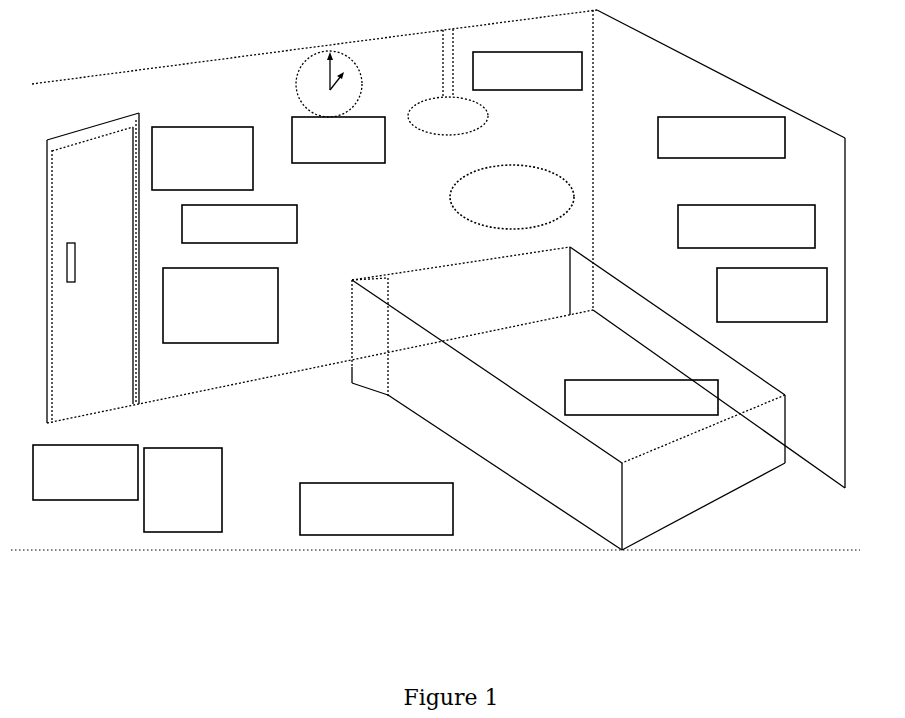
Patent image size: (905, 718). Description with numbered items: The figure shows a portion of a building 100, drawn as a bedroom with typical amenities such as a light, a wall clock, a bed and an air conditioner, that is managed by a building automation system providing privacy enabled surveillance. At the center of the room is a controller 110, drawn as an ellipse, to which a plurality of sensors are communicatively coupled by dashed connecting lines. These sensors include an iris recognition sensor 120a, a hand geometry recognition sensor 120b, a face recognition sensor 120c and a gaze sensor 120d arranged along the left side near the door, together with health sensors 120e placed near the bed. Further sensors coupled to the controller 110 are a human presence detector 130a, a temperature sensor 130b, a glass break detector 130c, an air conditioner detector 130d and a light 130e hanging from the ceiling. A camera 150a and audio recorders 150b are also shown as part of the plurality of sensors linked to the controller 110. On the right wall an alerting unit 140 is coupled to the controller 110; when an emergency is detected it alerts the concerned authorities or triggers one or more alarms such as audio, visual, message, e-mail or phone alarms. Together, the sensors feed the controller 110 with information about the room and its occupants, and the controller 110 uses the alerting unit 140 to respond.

The building 100 is at (435, 275).
The controller 110 is at (512, 197).
The iris recognition sensor 120a is at (476, 228).
The hand geometry recognition sensor 120b is at (465, 224).
The face recognition sensor 120c is at (455, 197).
The gaze sensor 120d is at (466, 176).
The health sensors 120e is at (560, 229).
The human presence detector 130a is at (557, 172).
The temperature sensor 130b is at (514, 229).
The glass break detector 130c is at (574, 205).
The air conditioner detector 130d is at (574, 193).
The light 130e is at (508, 166).
The alerting unit 140 is at (772, 295).
The camera 150a is at (463, 215).
The audio recorders 150b is at (468, 226).